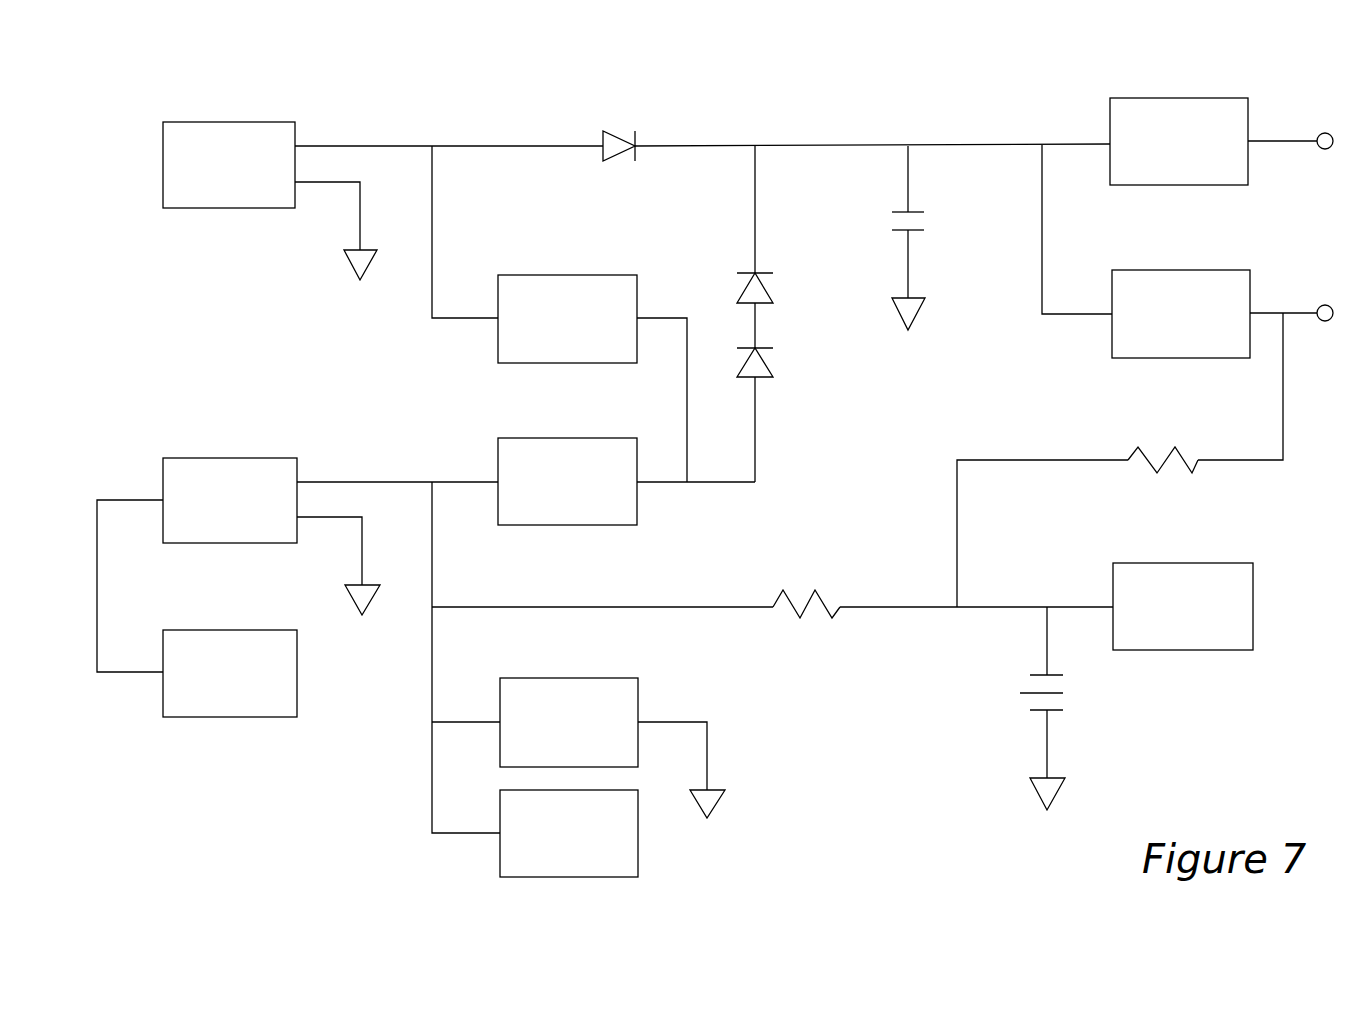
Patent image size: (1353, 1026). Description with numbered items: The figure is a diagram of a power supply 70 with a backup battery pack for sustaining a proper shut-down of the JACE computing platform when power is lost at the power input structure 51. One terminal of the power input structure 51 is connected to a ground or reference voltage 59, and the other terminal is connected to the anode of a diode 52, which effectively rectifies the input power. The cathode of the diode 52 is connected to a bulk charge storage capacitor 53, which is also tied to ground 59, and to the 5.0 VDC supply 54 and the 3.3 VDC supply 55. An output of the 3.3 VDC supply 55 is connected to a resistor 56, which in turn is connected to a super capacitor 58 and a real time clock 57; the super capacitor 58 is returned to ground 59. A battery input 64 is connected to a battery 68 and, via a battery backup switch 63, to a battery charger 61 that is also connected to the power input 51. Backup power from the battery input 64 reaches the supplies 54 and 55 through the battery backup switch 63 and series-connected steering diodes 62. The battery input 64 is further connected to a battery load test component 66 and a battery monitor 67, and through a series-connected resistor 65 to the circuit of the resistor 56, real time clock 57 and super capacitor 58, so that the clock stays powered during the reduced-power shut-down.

The power supply 70 is at (797, 90).
The power input structure 51 is at (228, 122).
The diode 52 is at (608, 130).
The bulk charge storage capacitor 53 is at (898, 229).
The 5.0 VDC supply 54 is at (1178, 98).
The 3.3 VDC supply 55 is at (1180, 270).
The resistor 56 is at (1180, 450).
The real time clock 57 is at (1183, 563).
The super capacitor 58 is at (1062, 701).
The ground or reference voltage 59 is at (355, 270).
The battery charger 61 is at (568, 275).
The steering diode 62 is at (745, 292).
The battery backup switch 63 is at (568, 438).
The battery input 64 is at (230, 458).
The resistor 65 is at (818, 596).
The battery load test component 66 is at (568, 678).
The battery monitor 67 is at (638, 850).
The battery 68 is at (230, 630).